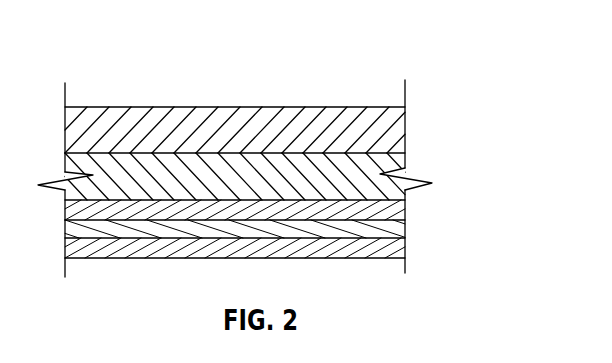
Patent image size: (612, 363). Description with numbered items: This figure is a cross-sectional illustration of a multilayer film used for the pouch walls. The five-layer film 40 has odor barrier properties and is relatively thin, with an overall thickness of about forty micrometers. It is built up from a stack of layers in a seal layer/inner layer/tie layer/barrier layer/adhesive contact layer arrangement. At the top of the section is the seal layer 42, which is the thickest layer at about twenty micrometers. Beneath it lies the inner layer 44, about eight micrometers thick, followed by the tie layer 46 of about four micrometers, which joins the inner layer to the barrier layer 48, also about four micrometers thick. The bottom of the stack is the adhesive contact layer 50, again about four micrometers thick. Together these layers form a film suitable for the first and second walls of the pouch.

The five-layer film 40 is at (320, 42).
The seal layer 42 is at (395, 130).
The inner layer 44 is at (385, 173).
The tie layer 46 is at (390, 208).
The barrier layer 48 is at (400, 228).
The adhesive contact layer 50 is at (405, 250).